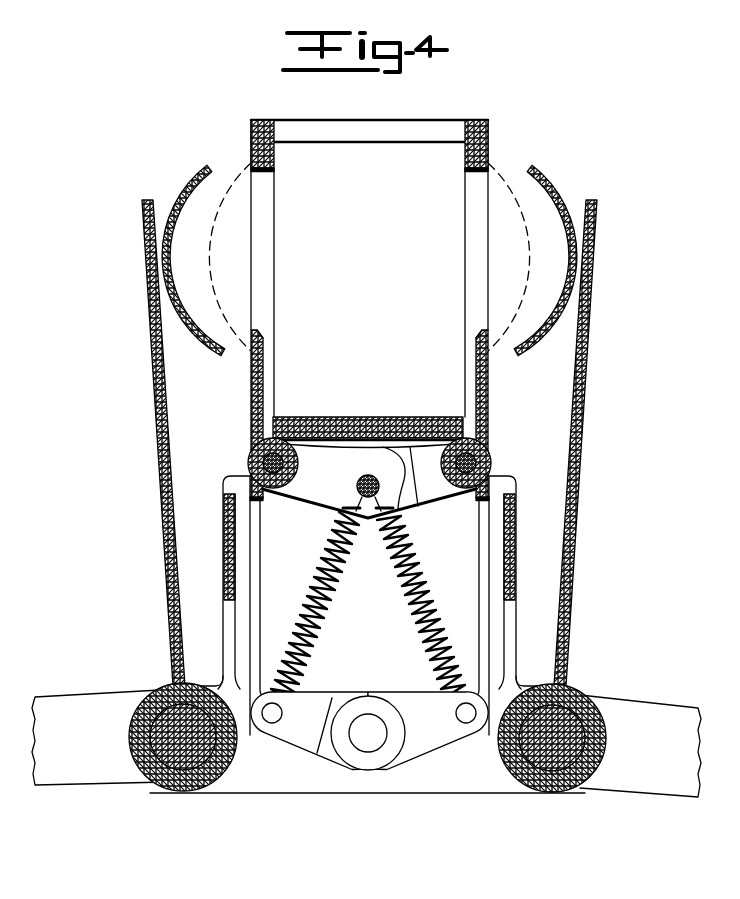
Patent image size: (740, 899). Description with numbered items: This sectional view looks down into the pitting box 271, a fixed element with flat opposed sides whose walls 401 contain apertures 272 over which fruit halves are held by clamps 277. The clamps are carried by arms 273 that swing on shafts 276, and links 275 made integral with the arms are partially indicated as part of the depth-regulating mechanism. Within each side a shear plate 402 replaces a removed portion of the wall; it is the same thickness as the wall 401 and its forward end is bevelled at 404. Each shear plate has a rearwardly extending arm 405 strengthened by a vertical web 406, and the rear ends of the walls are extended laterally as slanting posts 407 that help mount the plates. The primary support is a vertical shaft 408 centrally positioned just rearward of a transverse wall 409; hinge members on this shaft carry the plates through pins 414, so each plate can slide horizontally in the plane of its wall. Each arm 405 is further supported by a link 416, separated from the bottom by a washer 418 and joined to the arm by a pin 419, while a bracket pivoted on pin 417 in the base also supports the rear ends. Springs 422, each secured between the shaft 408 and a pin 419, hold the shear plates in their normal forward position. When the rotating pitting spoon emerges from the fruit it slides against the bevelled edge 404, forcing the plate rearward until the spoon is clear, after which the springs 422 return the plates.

The pitting box 271 is at (378, 118).
The aperture 272 is at (265, 169).
The arm 273 is at (160, 338).
The link 275 is at (70, 763).
The shaft 276 is at (188, 748).
The clamp 277 is at (197, 338).
The wall 401 is at (257, 160).
The shear plate 402 is at (252, 391).
The bevelled edge 404 is at (262, 335).
The rearwardly extending arm 405 is at (252, 556).
The vertical web 406 is at (257, 614).
The slanting post 407 is at (230, 556).
The vertical shaft 408 is at (368, 522).
The transverse wall 409 is at (353, 423).
The pin 414 is at (263, 462).
The link 416 is at (308, 741).
The pin 417 is at (367, 741).
The washer 418 is at (385, 771).
The pin 419 is at (272, 718).
The spring 422 is at (324, 617).